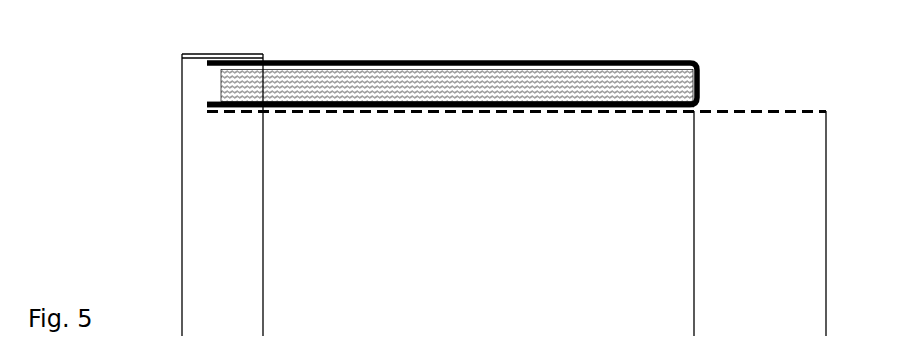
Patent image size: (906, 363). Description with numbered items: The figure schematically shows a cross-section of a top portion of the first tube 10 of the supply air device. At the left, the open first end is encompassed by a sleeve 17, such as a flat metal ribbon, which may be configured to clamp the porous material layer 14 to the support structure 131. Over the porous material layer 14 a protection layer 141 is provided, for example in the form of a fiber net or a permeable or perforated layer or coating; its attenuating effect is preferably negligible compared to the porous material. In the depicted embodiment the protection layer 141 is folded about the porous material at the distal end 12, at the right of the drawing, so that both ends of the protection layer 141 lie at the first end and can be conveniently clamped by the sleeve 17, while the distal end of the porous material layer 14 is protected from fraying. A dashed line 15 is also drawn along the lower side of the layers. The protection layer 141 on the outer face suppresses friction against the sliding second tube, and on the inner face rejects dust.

The first tube 10 is at (473, 263).
The distal end 12 is at (815, 265).
The porous material layer 14 is at (452, 59).
The protection layer 141 is at (578, 62).
The support structure 131 is at (563, 113).
The boundary line 15 is at (733, 135).
The sleeve 17 is at (190, 231).